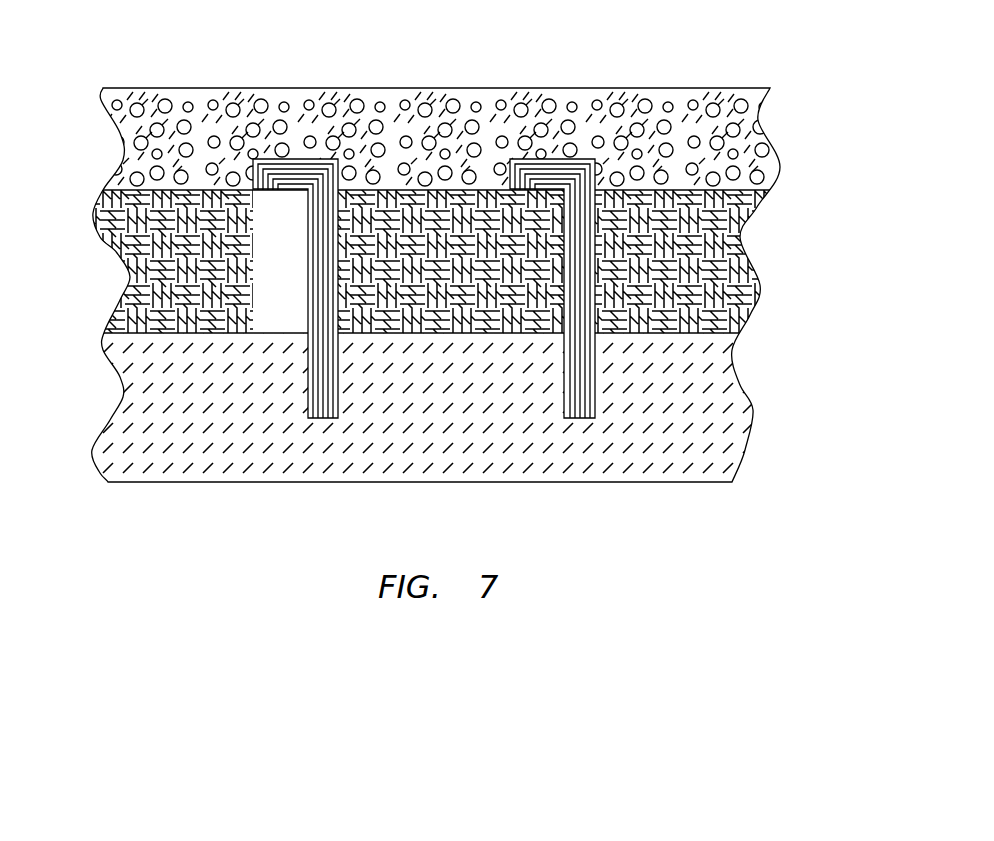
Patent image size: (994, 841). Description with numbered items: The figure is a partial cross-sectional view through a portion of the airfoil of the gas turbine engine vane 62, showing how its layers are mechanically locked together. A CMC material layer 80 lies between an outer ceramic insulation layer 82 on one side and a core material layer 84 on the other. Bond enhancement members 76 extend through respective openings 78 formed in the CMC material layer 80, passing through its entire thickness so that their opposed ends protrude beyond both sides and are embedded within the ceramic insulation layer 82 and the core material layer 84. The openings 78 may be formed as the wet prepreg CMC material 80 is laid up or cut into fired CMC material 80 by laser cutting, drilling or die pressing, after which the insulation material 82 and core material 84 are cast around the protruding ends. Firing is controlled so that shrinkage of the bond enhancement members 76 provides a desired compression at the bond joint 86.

The gas turbine engine vane 62 is at (104, 36).
The ceramic insulation layer 82 is at (758, 120).
The bond joint 86 is at (752, 197).
The CMC material layer 80 is at (757, 275).
The core material layer 84 is at (743, 433).
The openings 78 is at (306, 333).
The bond enhancement members 76 is at (306, 403).